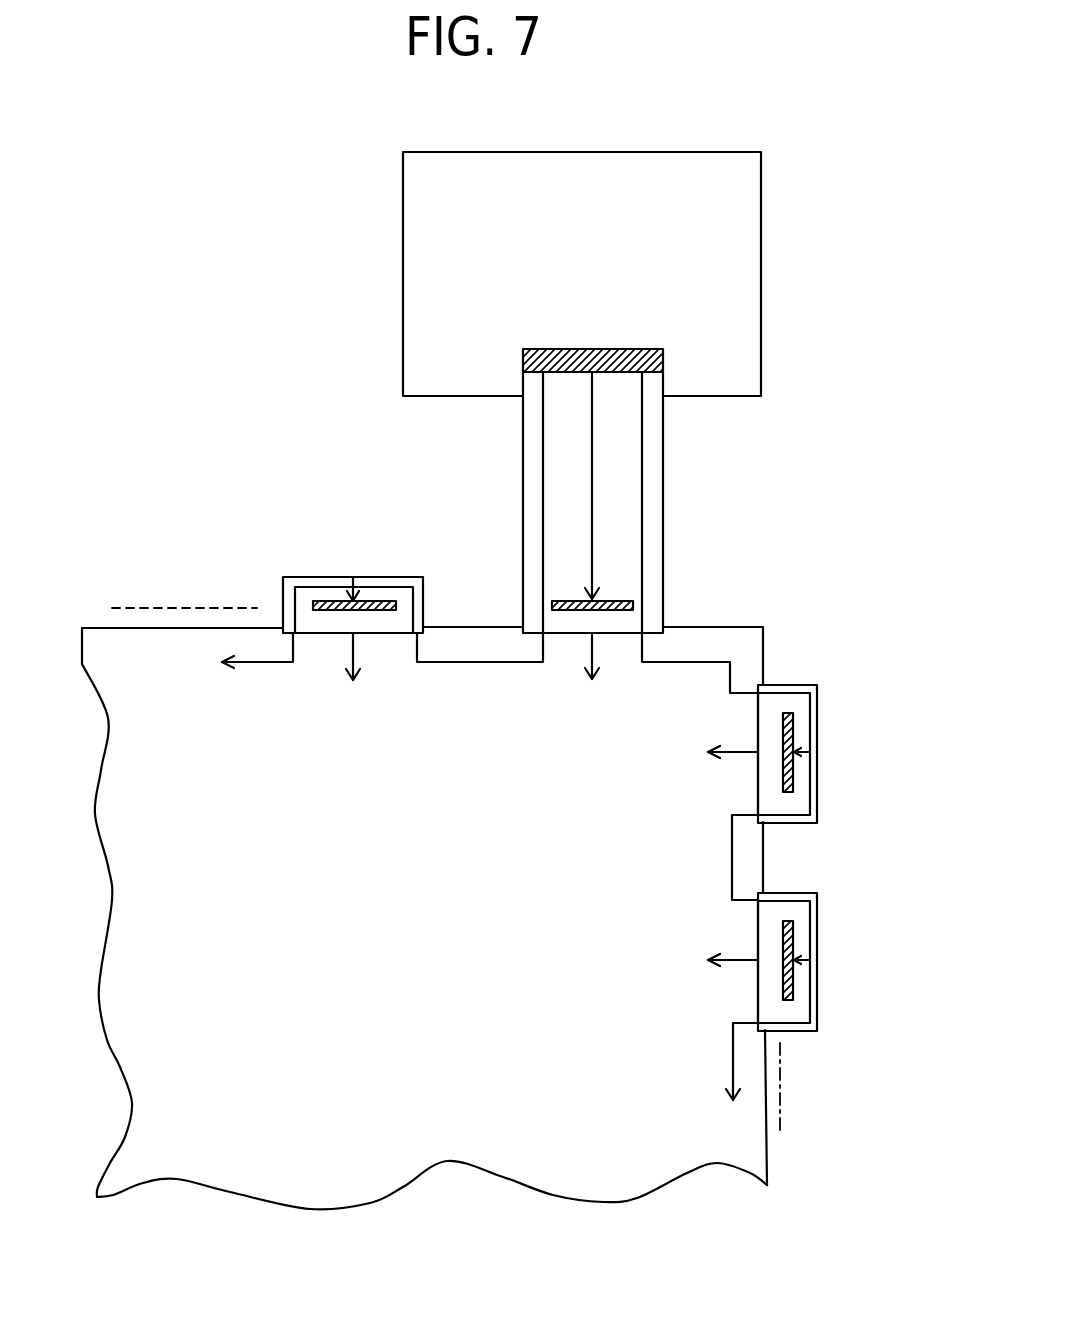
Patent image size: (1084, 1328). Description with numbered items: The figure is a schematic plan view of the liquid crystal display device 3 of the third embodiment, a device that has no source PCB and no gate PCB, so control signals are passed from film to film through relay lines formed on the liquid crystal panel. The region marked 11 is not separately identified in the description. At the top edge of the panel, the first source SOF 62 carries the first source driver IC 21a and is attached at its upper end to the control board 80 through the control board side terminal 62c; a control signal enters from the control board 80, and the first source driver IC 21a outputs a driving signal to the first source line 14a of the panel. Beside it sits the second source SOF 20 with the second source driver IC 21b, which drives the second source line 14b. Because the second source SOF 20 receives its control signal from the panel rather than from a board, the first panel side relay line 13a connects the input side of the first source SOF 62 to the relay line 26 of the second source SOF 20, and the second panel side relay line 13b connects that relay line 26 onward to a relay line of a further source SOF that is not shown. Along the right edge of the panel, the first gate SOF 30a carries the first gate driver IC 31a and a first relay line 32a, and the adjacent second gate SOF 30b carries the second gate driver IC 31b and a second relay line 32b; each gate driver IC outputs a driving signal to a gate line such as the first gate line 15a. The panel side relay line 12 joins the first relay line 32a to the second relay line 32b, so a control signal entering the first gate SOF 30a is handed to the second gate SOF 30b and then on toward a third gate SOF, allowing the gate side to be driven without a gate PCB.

The liquid crystal display device 3 is at (142, 465).
The substrate 11 is at (700, 662).
The panel side relay line 12 is at (732, 858).
The first panel side relay line 13a is at (472, 660).
The second panel side relay line 13b is at (262, 660).
The first source line 14a is at (597, 658).
The second source line 14b is at (363, 657).
The first gate line 15a is at (738, 752).
The second source SOF 20 is at (333, 623).
The first source driver IC 21a is at (563, 610).
The second source driver IC 21b is at (322, 610).
The relay line 26 is at (327, 588).
The first gate SOF 30a is at (763, 777).
The second gate SOF 30b is at (763, 985).
The first gate driver IC 31a is at (792, 782).
The second gate driver IC 31b is at (792, 990).
The first relay line 32a is at (813, 712).
The second relay line 32b is at (813, 920).
The first source SOF 62 is at (582, 623).
The control board side terminal 62c is at (597, 357).
The control board 80 is at (422, 271).